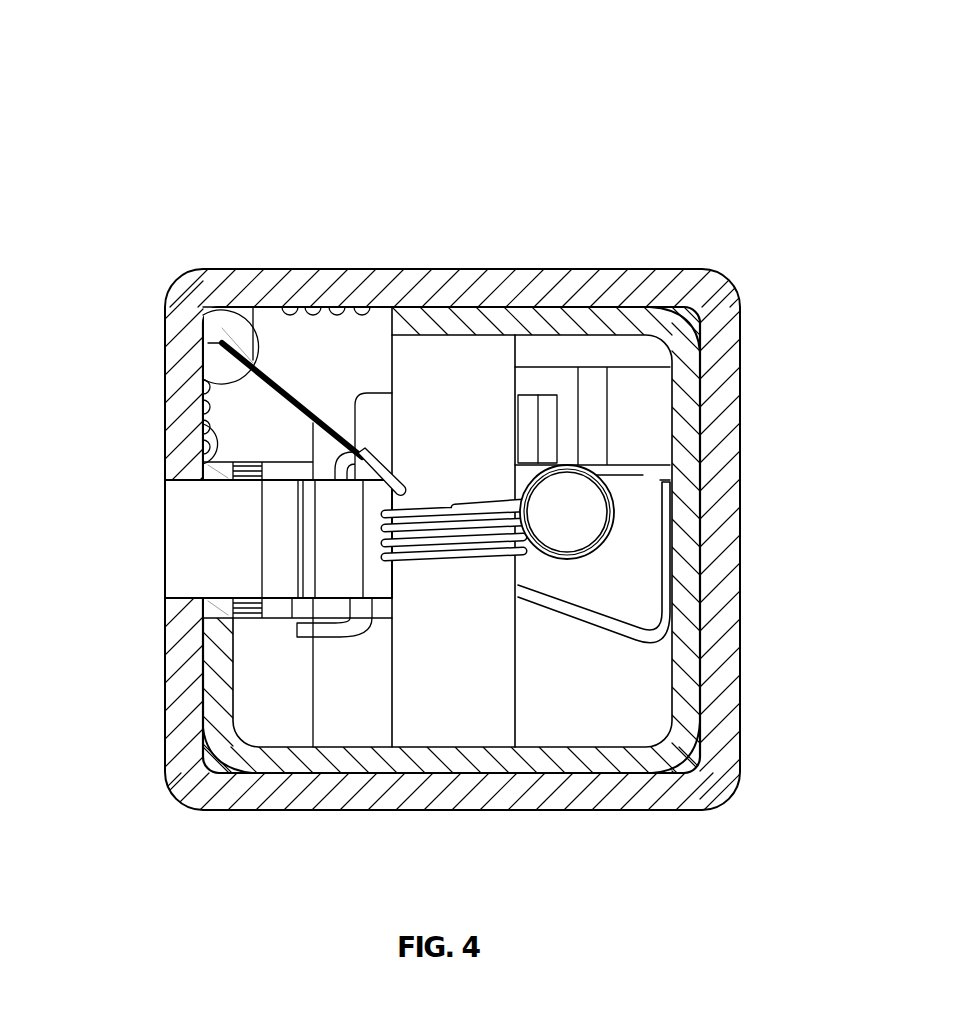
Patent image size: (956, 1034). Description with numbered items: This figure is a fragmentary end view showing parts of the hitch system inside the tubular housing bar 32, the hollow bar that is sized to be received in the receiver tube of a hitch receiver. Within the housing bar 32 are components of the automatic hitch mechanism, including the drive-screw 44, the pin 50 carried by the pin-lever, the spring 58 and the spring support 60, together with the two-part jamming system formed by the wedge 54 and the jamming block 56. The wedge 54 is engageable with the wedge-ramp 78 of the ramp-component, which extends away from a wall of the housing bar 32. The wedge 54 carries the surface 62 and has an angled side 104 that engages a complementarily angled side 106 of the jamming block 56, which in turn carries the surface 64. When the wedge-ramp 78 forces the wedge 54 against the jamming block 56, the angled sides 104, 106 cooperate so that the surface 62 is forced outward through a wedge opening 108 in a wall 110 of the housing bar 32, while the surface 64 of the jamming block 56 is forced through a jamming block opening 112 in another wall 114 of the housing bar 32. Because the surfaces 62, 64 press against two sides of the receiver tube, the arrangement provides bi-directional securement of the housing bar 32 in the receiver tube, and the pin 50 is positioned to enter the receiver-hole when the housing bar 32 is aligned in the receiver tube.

The wall 110 is at (608, 327).
The housing bar 32 is at (612, 688).
The spring support 60 is at (457, 690).
The wedge-ramp 78 is at (603, 406).
The spring 58 is at (500, 547).
The pin 50 is at (180, 548).
The angled side 104 is at (202, 385).
The jamming block 56 is at (202, 397).
The jamming block opening 112 is at (202, 389).
The surface 64 is at (202, 447).
The wall 114 is at (222, 330).
The wedge opening 108 is at (250, 307).
The surface 62 is at (322, 312).
The wedge 54 is at (312, 328).
The angled side 106 is at (300, 407).
The drive-screw 44 is at (580, 508).